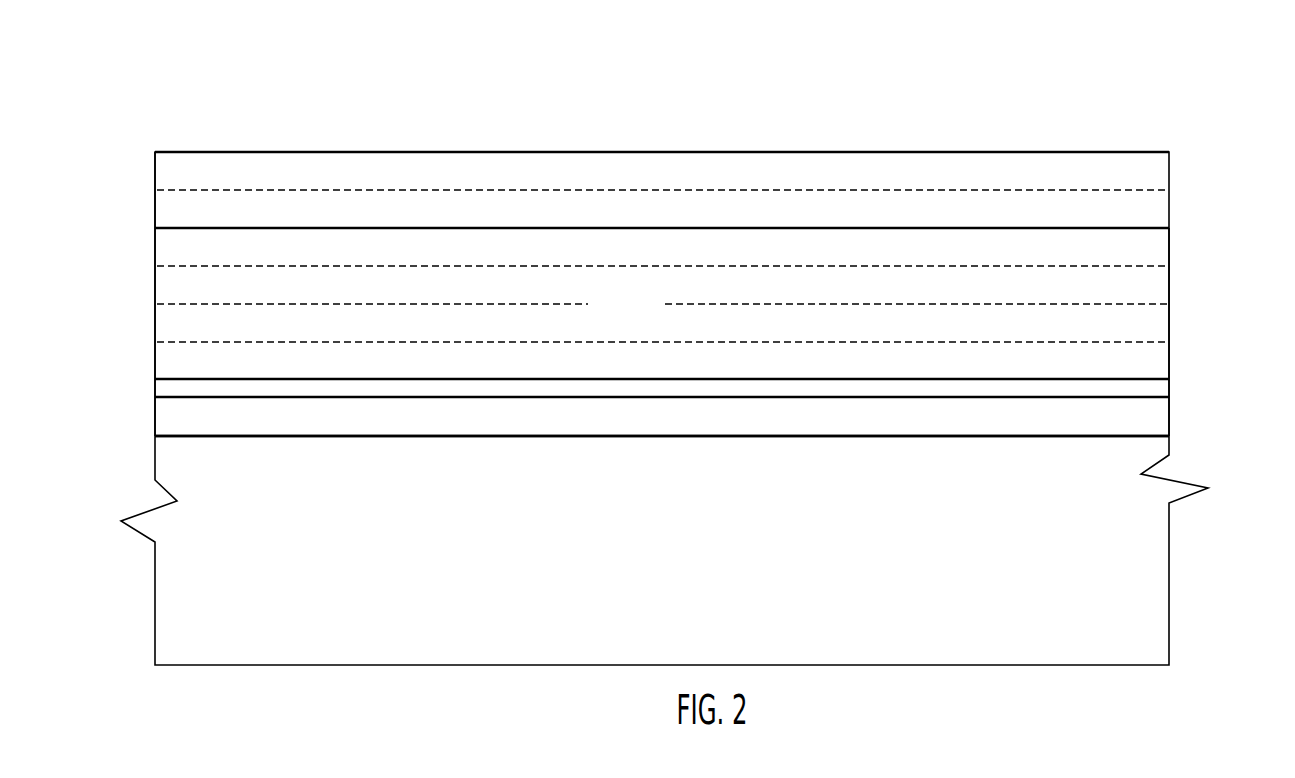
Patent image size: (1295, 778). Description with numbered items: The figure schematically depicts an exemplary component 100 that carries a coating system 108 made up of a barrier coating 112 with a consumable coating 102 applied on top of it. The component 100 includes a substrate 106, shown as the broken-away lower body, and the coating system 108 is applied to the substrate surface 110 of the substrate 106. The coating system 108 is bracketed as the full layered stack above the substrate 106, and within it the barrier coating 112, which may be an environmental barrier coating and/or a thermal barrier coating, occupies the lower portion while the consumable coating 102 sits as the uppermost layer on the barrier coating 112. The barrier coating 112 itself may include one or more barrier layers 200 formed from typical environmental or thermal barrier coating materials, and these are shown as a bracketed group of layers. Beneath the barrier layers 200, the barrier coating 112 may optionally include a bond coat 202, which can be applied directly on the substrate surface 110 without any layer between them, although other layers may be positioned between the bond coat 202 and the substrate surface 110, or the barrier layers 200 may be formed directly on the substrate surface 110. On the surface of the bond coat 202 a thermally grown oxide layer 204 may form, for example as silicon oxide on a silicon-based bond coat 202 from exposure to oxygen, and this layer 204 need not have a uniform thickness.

The component 100 is at (1172, 111).
The consumable coating 102 is at (1176, 152).
The substrate 106 is at (653, 566).
The coating system 108 is at (147, 152).
The substrate surface 110 is at (904, 436).
The barrier coating 112 is at (1176, 228).
The barrier layers 200 is at (572, 228).
The bond coat 202 is at (653, 428).
The thermally grown oxide (TGO) layer 204 is at (766, 384).